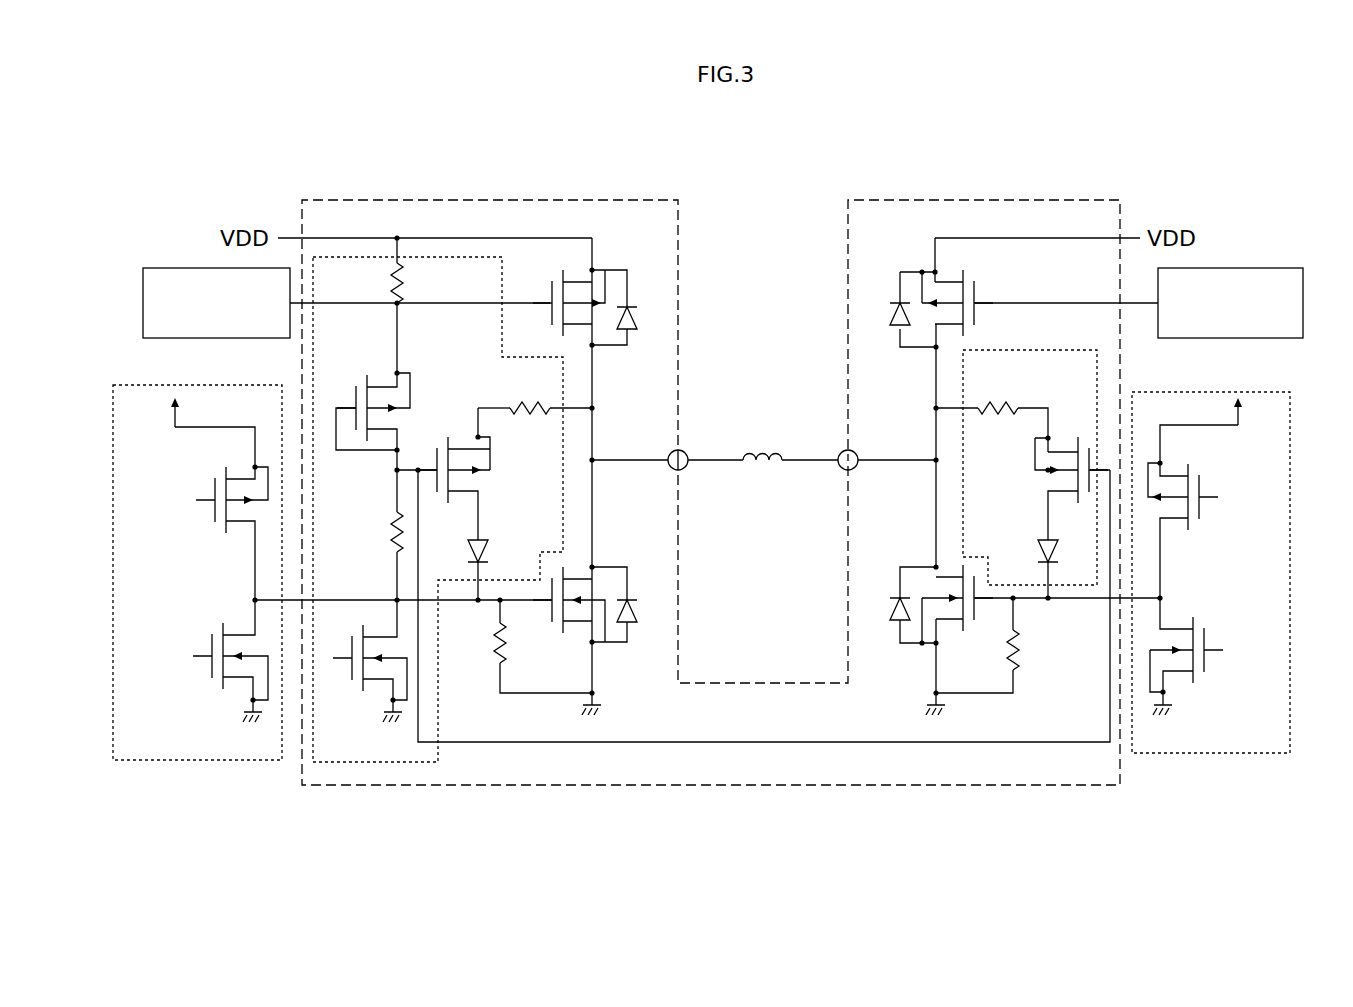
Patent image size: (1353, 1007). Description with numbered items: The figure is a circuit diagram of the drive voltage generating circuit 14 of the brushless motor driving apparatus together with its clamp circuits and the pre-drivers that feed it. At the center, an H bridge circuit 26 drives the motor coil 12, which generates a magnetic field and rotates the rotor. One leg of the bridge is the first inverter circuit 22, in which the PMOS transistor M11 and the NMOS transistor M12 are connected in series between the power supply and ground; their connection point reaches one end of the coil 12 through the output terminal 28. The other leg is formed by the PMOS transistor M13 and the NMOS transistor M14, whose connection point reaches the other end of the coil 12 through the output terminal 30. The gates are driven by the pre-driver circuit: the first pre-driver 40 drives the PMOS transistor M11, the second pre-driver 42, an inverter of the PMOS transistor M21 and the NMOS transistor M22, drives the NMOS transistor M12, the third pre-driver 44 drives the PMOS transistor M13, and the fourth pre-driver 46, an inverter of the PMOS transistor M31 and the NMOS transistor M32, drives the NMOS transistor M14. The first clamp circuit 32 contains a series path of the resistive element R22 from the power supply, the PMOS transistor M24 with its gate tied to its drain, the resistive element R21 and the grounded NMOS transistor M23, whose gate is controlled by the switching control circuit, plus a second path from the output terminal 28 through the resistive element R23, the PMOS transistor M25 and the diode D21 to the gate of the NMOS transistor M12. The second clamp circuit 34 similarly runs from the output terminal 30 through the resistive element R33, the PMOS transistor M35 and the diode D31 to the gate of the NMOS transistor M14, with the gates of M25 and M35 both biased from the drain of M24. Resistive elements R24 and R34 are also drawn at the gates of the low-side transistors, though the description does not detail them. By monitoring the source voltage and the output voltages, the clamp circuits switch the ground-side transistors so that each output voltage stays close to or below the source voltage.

The drive voltage generating circuit 14 is at (1040, 200).
The coil 12 is at (769, 445).
The first inverter circuit 22 is at (603, 508).
The H bridge circuit 26 is at (758, 693).
The output terminal 28 is at (687, 452).
The output terminal 30 is at (858, 452).
The first clamp circuit 32 is at (446, 753).
The second clamp circuit 34 is at (1040, 349).
The first pre-driver 40 is at (167, 266).
The second pre-driver 42 is at (180, 761).
The third pre-driver 44 is at (1262, 268).
The fourth pre-driver 46 is at (1310, 415).
The PMOS transistor M11 is at (635, 285).
The NMOS transistor M12 is at (542, 612).
The PMOS transistor M13 is at (880, 284).
The NMOS transistor M14 is at (888, 590).
The PMOS transistor M21 is at (195, 477).
The NMOS transistor M22 is at (195, 637).
The NMOS transistor M23 is at (346, 670).
The PMOS transistor M24 is at (350, 370).
The PMOS transistor M25 is at (523, 500).
The PMOS transistor M31 is at (1218, 518).
The NMOS transistor M32 is at (1199, 687).
The PMOS transistor M35 is at (1025, 452).
The resistive element R21 is at (380, 507).
The resistive element R22 is at (386, 272).
The resistive element R23 is at (500, 402).
The resistor R24 is at (473, 673).
The resistive element R33 is at (1032, 398).
The resistor R34 is at (1073, 657).
The diode D21 is at (527, 518).
The diode D31 is at (1030, 560).